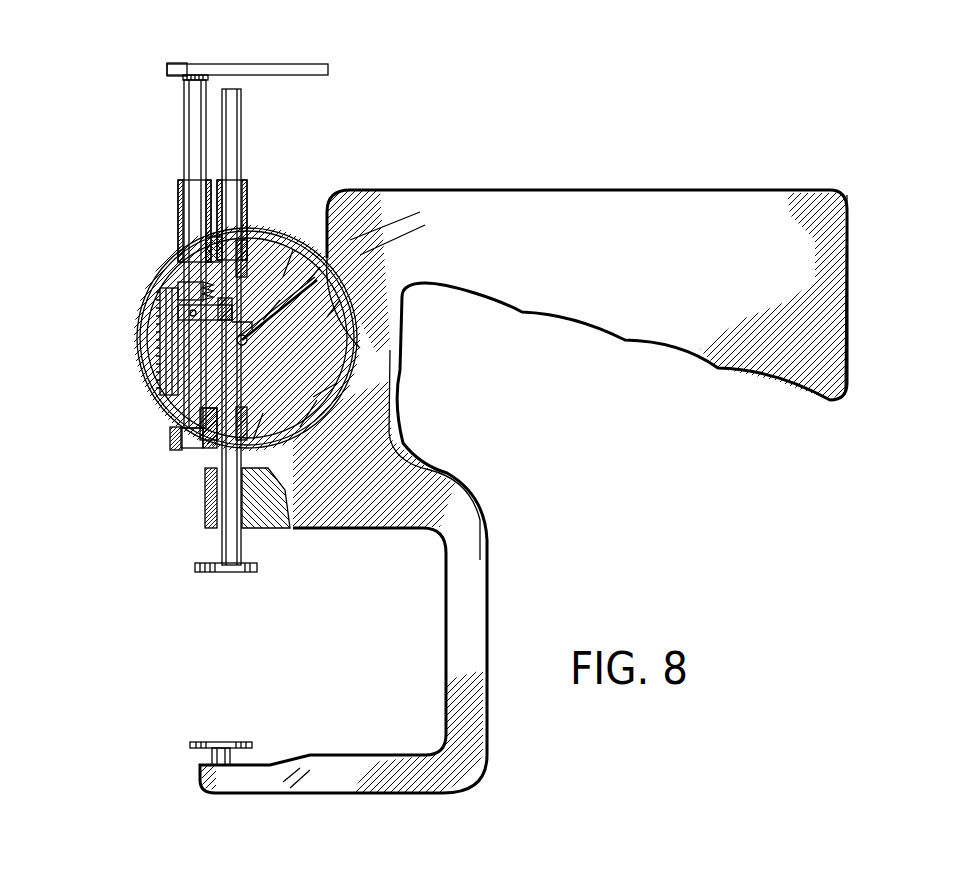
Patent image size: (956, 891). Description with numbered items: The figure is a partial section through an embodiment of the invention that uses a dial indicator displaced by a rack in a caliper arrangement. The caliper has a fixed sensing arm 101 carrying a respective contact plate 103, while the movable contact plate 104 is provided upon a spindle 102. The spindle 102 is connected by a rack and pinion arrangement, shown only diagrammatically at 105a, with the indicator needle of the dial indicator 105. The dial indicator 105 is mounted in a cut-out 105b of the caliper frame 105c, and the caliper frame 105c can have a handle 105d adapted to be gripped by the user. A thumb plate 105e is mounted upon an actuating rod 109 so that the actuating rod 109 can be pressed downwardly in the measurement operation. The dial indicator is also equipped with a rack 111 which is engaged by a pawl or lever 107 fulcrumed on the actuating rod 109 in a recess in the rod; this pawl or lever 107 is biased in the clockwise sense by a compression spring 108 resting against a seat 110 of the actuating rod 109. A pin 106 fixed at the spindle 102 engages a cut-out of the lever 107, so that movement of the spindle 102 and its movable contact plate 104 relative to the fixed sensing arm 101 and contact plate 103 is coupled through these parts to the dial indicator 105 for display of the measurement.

The fixed sensing arm 101 is at (212, 758).
The spindle 102 is at (223, 553).
The contact plate 103 is at (243, 742).
The movable contact plate 104 is at (228, 572).
The dial indicator 105 is at (318, 407).
The rack and pinion arrangement 105a is at (237, 350).
The cut-out 105b is at (357, 387).
The caliper frame 105c is at (447, 473).
The handle 105d is at (528, 188).
The thumb plate 105e is at (303, 66).
The pin 106 is at (236, 322).
The pawl or lever 107 is at (178, 298).
The compression spring 108 is at (220, 293).
The actuating rod 109 is at (195, 160).
The seat 110 is at (220, 272).
The rack 111 is at (168, 352).